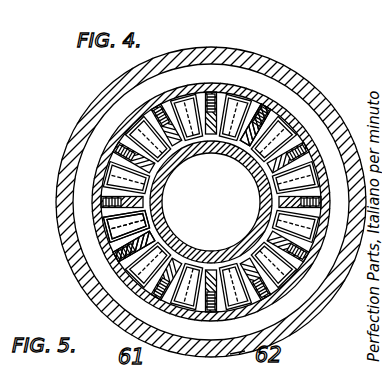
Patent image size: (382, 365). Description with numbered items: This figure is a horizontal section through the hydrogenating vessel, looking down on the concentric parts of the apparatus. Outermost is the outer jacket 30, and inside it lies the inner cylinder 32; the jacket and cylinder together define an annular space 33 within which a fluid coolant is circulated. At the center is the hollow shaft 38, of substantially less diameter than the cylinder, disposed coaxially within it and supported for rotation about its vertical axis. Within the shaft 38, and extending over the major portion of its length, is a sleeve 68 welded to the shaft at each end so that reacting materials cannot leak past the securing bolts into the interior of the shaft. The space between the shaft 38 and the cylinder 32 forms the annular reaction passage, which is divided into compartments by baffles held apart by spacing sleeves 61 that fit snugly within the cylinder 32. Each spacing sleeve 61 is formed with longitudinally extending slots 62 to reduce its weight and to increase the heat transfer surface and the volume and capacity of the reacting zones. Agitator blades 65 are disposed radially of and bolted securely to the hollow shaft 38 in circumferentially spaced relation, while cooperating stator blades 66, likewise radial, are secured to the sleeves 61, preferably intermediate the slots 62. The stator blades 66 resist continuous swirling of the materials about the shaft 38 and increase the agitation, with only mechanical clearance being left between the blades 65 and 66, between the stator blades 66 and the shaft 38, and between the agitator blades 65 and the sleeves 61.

The outer jacket 30 is at (97, 109).
The inner cylinder 32 is at (108, 152).
The annular space 33 is at (222, 70).
The hollow shaft 38 is at (236, 150).
The sleeve 68 is at (265, 205).
The spacing sleeve 61 is at (92, 220).
The longitudinally extending slot 62 is at (282, 118).
The agitator blade 65 is at (270, 135).
The stator blade 66 is at (182, 108).